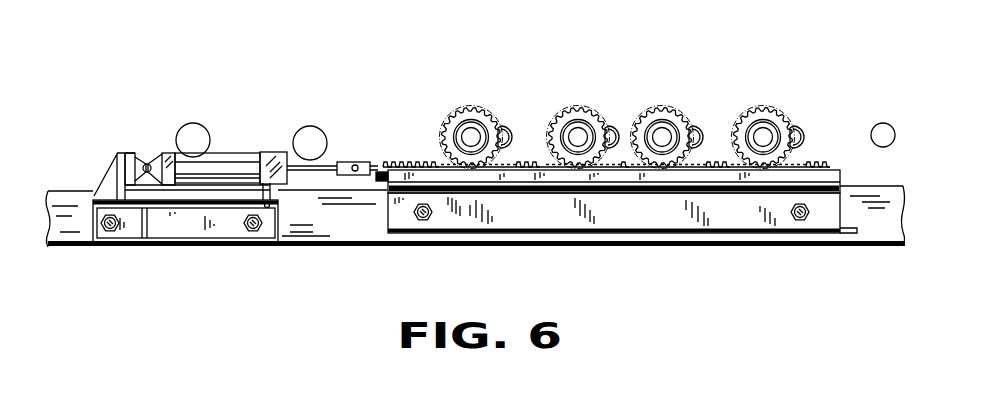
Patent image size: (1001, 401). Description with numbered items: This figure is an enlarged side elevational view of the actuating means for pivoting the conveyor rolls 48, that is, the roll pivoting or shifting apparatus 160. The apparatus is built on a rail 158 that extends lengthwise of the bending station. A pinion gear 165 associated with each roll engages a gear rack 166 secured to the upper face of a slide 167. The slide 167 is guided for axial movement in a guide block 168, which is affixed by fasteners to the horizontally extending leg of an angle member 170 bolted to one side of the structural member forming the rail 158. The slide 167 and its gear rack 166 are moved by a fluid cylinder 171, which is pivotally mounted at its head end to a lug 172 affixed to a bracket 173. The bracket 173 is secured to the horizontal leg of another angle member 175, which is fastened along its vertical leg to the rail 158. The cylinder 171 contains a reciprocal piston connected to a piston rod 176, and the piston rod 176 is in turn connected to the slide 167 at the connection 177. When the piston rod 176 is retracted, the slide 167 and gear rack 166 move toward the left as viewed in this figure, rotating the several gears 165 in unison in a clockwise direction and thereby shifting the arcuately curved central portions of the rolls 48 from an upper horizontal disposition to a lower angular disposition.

The roll pivoting or shifting apparatus 160 is at (678, 70).
The rail 158 is at (857, 233).
The angle member 175 is at (182, 233).
The bracket 173 is at (121, 162).
The lug 172 is at (140, 157).
The fluid cylinder 171 is at (230, 165).
The piston rod 176 is at (330, 162).
The connection 177 is at (347, 163).
The slide 167 is at (377, 178).
The gear rack 166 is at (427, 162).
The guide block 168 is at (400, 174).
The angle member 170 is at (385, 220).
The pinion gear 165 is at (760, 110).
The conveyor rolls 48 is at (696, 206).